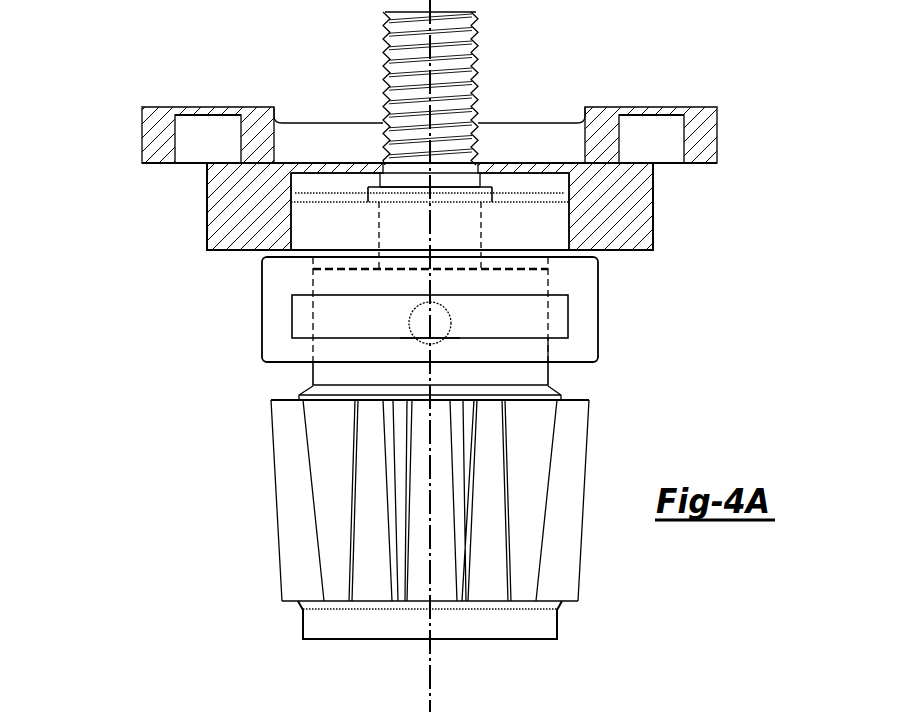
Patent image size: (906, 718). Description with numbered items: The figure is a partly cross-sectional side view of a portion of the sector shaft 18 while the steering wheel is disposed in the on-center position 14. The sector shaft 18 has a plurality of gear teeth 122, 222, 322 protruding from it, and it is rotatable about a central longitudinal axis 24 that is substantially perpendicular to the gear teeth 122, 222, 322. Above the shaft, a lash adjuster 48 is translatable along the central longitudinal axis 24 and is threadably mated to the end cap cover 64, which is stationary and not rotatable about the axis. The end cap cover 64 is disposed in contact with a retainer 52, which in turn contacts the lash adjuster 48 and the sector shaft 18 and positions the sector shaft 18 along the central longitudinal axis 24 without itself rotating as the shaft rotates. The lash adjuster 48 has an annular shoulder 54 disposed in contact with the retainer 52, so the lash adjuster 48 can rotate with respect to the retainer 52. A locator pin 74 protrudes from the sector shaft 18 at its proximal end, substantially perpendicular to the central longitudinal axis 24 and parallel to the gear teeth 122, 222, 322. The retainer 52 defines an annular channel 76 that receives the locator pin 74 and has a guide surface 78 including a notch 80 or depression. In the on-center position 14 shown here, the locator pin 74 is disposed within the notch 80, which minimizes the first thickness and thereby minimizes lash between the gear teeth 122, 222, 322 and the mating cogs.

The on-center position 14 is at (112, 57).
The lash adjuster 48 is at (480, 42).
The end cap cover 64 is at (718, 140).
The annular shoulder 54 is at (488, 190).
The retainer 52 is at (598, 332).
The annular channel 76 is at (550, 306).
The locator pin 74 is at (409, 326).
The notch 80 is at (411, 343).
The guide surface 78 is at (513, 333).
The sector shaft 18 is at (313, 375).
The gear tooth 122 is at (335, 575).
The gear tooth 322 is at (528, 582).
The gear tooth 222 is at (417, 588).
The central longitudinal axis 24 is at (432, 658).